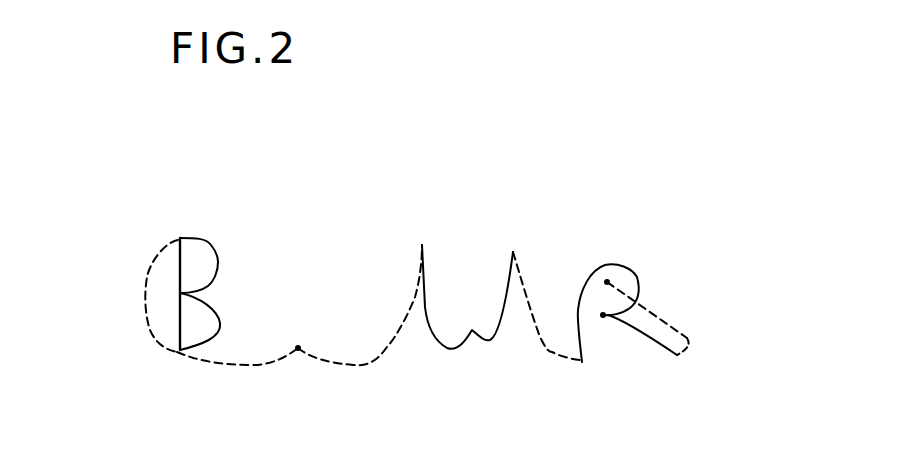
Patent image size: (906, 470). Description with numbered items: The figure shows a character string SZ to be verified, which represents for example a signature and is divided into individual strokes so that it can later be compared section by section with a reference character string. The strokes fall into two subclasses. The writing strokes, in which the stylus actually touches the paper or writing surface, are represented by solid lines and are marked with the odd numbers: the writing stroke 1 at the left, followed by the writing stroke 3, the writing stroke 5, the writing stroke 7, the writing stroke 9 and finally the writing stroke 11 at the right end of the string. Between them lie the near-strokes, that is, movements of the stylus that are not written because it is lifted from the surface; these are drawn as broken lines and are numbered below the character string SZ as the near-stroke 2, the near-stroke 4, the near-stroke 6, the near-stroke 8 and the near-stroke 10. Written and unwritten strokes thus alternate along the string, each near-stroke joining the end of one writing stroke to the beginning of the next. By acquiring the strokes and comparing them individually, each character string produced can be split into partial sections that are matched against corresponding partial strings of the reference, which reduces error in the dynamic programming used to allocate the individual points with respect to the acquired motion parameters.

The writing stroke 1 is at (175, 273).
The near-stroke 2 is at (147, 320).
The character string SZ is at (202, 237).
The writing stroke 3 is at (218, 278).
The near-stroke 4 is at (253, 365).
The writing stroke 5 is at (298, 347).
The near-stroke 6 is at (373, 363).
The writing stroke 7 is at (423, 283).
The near-stroke 8 is at (543, 360).
The writing stroke 9 is at (632, 330).
The near-stroke 10 is at (690, 350).
The writing stroke 11 is at (613, 268).